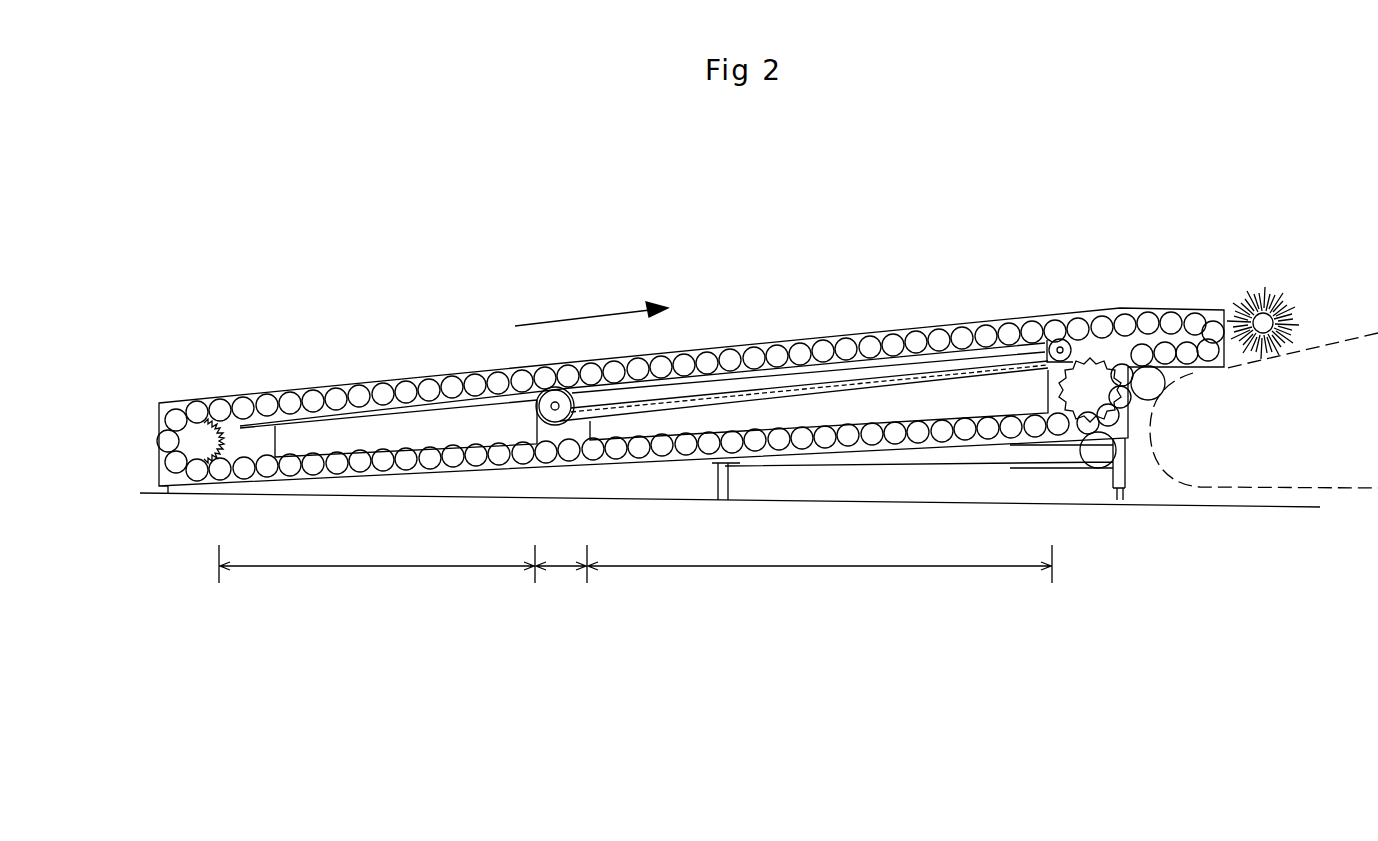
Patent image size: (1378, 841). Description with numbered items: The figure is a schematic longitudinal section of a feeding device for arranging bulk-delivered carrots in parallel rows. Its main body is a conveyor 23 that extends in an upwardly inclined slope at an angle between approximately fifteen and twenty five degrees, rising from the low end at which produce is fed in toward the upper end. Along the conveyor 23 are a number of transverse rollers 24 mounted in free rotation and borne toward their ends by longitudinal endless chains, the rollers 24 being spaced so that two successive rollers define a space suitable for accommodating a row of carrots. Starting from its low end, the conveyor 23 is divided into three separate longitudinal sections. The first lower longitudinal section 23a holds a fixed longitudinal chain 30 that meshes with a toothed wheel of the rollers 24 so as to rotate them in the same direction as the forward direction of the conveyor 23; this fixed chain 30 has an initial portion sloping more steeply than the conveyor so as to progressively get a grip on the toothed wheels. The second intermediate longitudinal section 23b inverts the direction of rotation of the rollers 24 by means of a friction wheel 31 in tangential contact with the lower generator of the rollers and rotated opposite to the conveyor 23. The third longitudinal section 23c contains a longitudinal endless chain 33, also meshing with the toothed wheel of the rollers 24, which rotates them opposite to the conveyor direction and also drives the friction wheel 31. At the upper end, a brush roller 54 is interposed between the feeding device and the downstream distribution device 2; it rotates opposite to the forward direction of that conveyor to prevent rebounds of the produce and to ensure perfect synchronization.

The distribution device 2 is at (1343, 340).
The conveyor 23 is at (159, 405).
The first lower longitudinal section 23a is at (377, 560).
The second intermediate longitudinal section 23b is at (561, 560).
The third longitudinal section 23c is at (820, 560).
The transverse roller 24 is at (262, 405).
The fixed longitudinal chain 30 is at (375, 408).
The friction wheel 31 is at (550, 400).
The longitudinal endless chain 33 is at (858, 393).
The brush roller 54 is at (1272, 298).